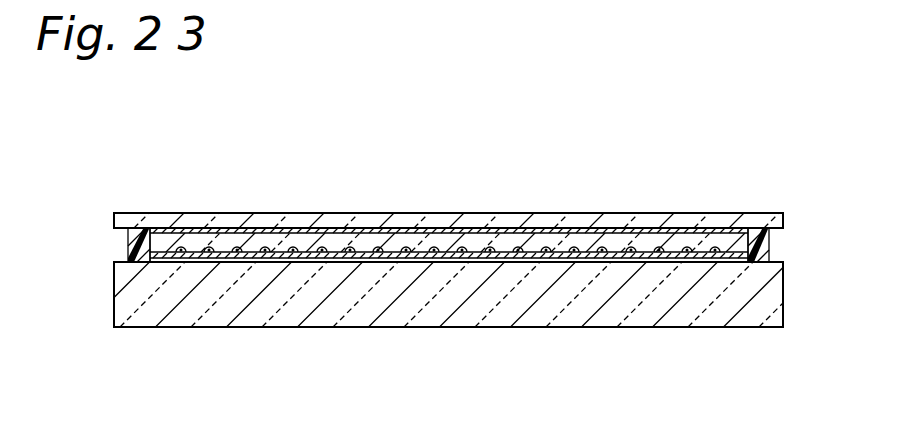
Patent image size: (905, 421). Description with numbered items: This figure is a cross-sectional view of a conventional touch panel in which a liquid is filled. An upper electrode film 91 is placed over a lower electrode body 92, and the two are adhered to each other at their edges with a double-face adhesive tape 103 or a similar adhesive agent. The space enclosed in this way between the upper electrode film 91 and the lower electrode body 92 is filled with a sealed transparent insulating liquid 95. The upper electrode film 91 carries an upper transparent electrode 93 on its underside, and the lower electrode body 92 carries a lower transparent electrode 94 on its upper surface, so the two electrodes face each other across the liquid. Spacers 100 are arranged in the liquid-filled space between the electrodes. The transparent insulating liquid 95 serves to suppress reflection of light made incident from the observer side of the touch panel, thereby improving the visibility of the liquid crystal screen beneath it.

The upper electrode film 91 is at (687, 212).
The lower electrode body 92 is at (205, 304).
The upper transparent electrode 93 is at (200, 233).
The lower transparent electrode 94 is at (312, 258).
The transparent insulating liquid 95 is at (372, 245).
The spacer 100 is at (546, 250).
The double-face adhesive tape 103 is at (134, 236).